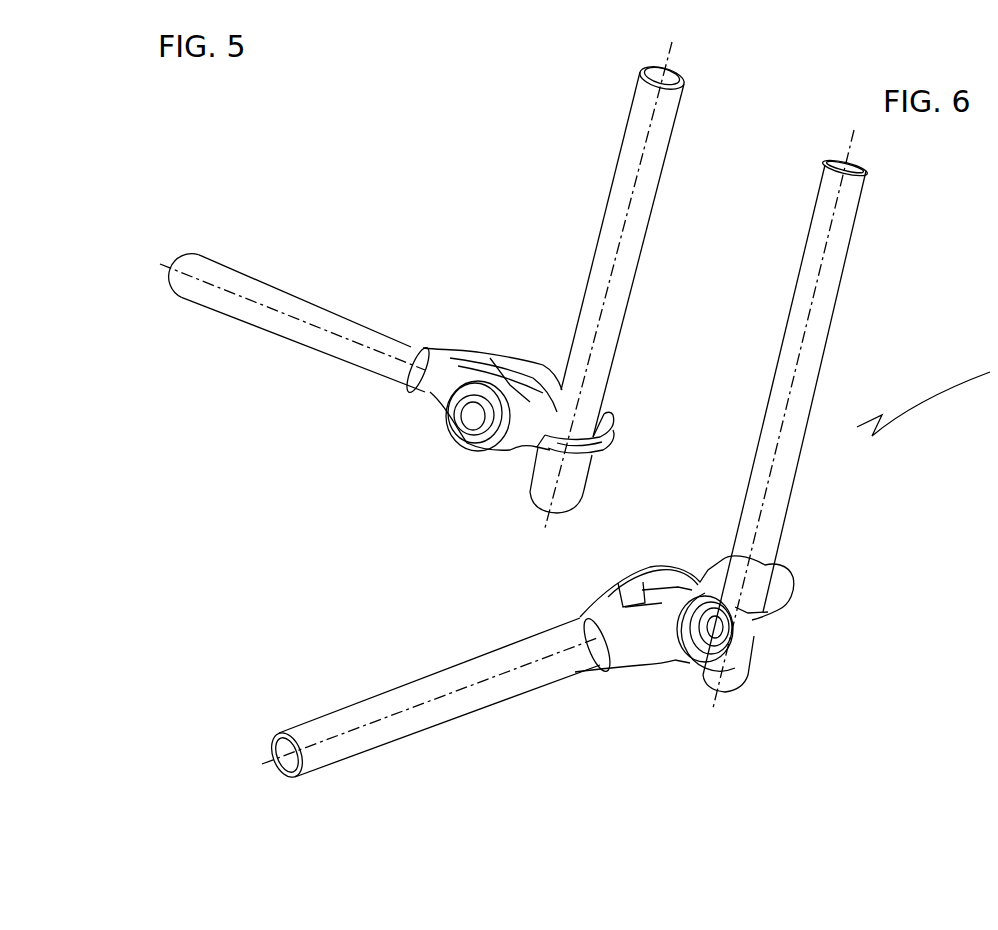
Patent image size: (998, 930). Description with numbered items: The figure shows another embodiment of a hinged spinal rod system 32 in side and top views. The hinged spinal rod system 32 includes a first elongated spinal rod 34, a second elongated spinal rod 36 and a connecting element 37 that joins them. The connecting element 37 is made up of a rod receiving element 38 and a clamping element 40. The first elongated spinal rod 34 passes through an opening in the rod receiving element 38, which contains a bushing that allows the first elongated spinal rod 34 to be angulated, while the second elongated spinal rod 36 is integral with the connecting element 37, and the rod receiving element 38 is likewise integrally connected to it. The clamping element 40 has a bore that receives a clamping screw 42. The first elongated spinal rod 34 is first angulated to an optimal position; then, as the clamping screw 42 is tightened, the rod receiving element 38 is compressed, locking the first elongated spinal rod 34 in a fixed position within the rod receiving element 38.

In FIG. 5, the hinged spinal rod system 32 is at (222, 407).
In FIG. 5, the first elongated spinal rod 34 is at (655, 158).
In FIG. 6, the first elongated spinal rod 34 is at (845, 237).
In FIG. 5, the second elongated spinal rod 36 is at (215, 275).
In FIG. 6, the second elongated spinal rod 36 is at (368, 743).
In FIG. 5, the connecting element 37 is at (492, 469).
In FIG. 6, the connecting element 37 is at (681, 676).
In FIG. 5, the rod receiving element 38 is at (608, 427).
In FIG. 6, the rod receiving element 38 is at (777, 583).
In FIG. 5, the clamping element 40 is at (452, 400).
In FIG. 6, the clamping element 40 is at (663, 560).
In FIG. 5, the clamping screw 42 is at (468, 425).
In FIG. 6, the clamping screw 42 is at (722, 632).